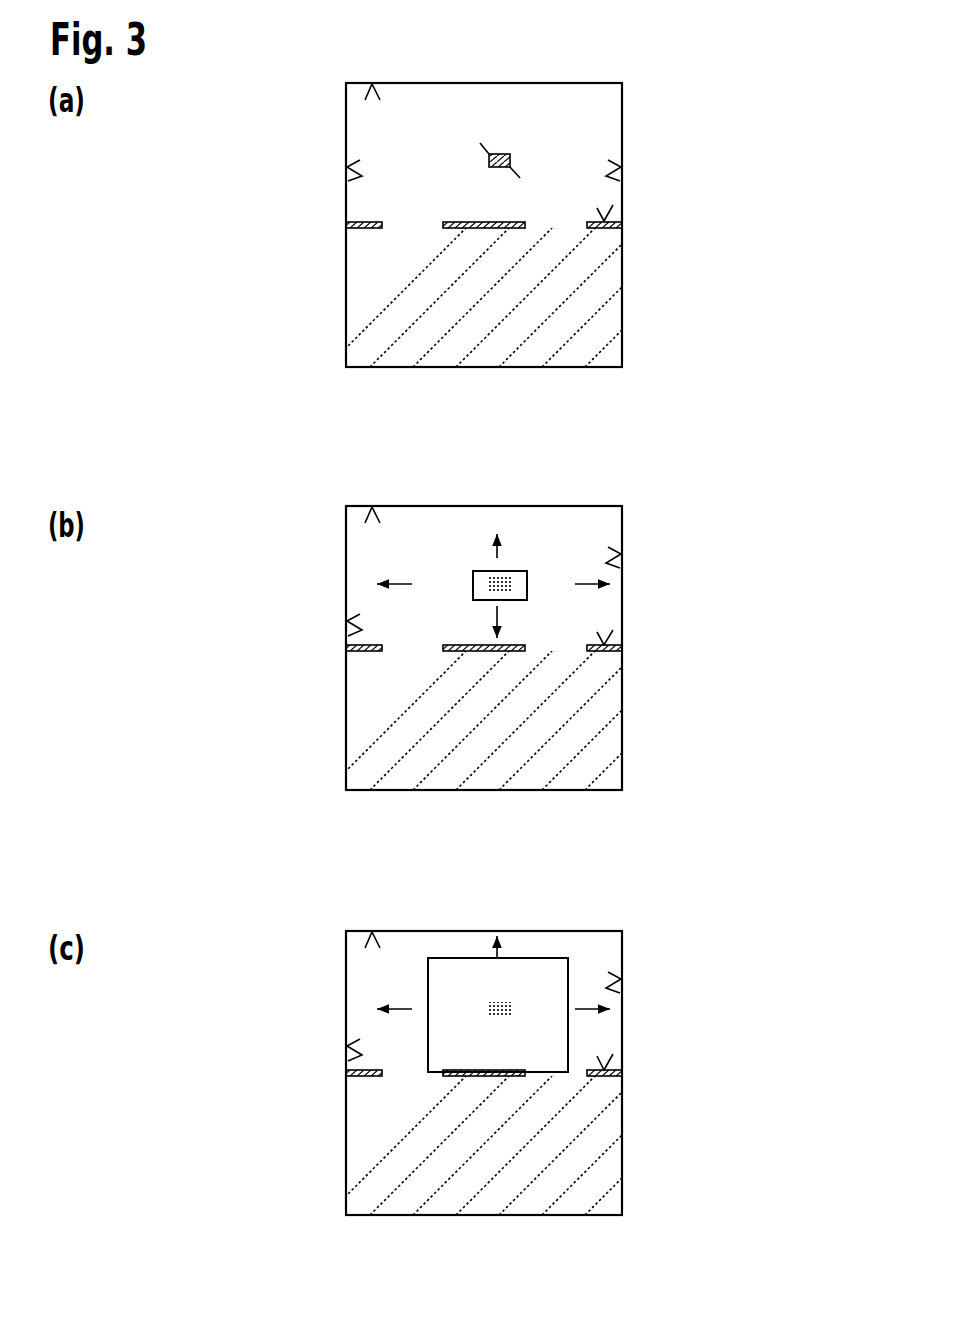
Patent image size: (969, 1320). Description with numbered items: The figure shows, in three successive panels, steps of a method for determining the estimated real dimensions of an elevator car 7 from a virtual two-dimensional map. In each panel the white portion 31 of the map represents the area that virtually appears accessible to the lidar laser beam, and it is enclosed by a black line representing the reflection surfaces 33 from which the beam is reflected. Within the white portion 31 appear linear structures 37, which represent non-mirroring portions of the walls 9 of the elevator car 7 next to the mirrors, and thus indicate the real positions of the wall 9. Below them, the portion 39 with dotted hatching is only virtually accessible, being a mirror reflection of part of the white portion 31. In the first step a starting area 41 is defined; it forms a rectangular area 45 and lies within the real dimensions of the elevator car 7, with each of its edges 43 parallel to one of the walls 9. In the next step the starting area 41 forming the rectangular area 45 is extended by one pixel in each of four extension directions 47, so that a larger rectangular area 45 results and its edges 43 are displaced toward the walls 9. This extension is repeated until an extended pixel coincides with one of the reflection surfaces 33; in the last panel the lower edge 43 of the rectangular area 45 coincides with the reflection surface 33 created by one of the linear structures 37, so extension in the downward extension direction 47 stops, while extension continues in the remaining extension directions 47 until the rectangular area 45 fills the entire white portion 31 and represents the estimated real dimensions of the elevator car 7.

The elevator car 7 is at (702, 92).
The wall 9 is at (438, 78).
The white portion 31 is at (396, 140).
The reflection surfaces 33 is at (365, 100).
The linear structures 37 is at (473, 229).
The portion with dotted hatching 39 is at (545, 330).
The starting area 41 is at (507, 147).
The edges 43 is at (489, 154).
The rectangular area 45 is at (513, 150).
The extension directions 47 is at (500, 556).